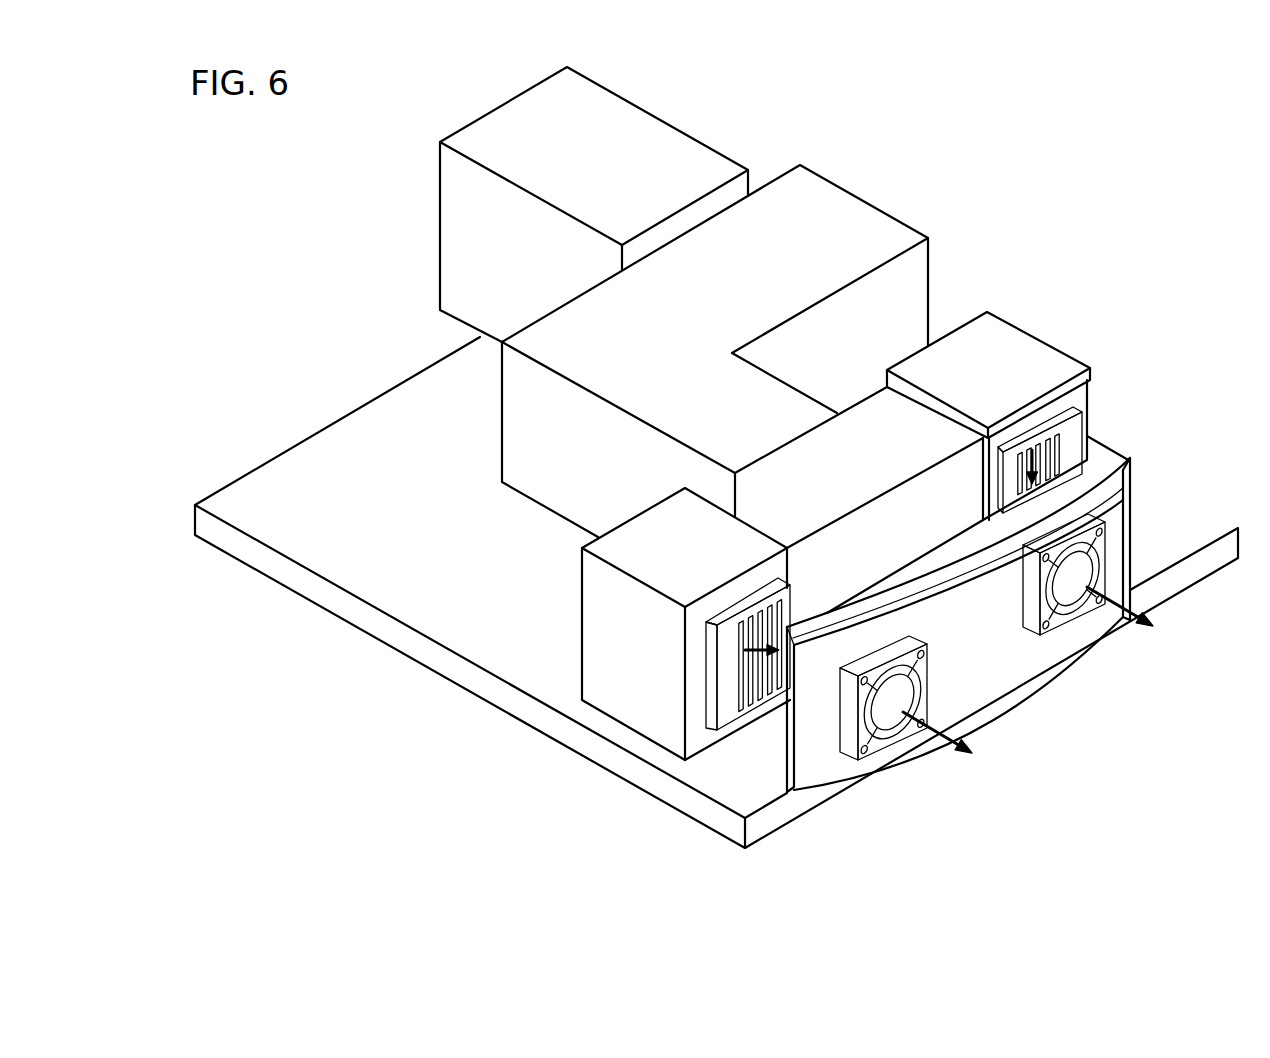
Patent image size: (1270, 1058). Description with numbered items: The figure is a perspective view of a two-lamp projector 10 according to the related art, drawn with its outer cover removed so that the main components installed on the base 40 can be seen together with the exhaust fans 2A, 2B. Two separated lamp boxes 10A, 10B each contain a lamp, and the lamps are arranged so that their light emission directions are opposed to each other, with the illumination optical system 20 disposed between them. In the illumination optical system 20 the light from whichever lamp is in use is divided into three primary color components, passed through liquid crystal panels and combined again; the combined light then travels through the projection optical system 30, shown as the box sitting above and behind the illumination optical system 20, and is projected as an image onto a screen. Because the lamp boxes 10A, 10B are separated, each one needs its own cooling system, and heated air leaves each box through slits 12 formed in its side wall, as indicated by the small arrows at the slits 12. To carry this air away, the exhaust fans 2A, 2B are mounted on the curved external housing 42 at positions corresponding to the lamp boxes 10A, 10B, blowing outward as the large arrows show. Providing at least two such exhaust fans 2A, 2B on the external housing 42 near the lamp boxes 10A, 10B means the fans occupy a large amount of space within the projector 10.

The projector 10 is at (228, 148).
The lamp box 10A is at (638, 686).
The lamp box 10B is at (1024, 351).
The slits 12 is at (752, 614).
The illumination optical system 20 is at (866, 216).
The projection optical system 30 is at (452, 237).
The base 40 is at (383, 627).
The external housing 42 is at (1030, 688).
The exhaust fan 2A is at (883, 750).
The exhaust fan 2B is at (1082, 628).